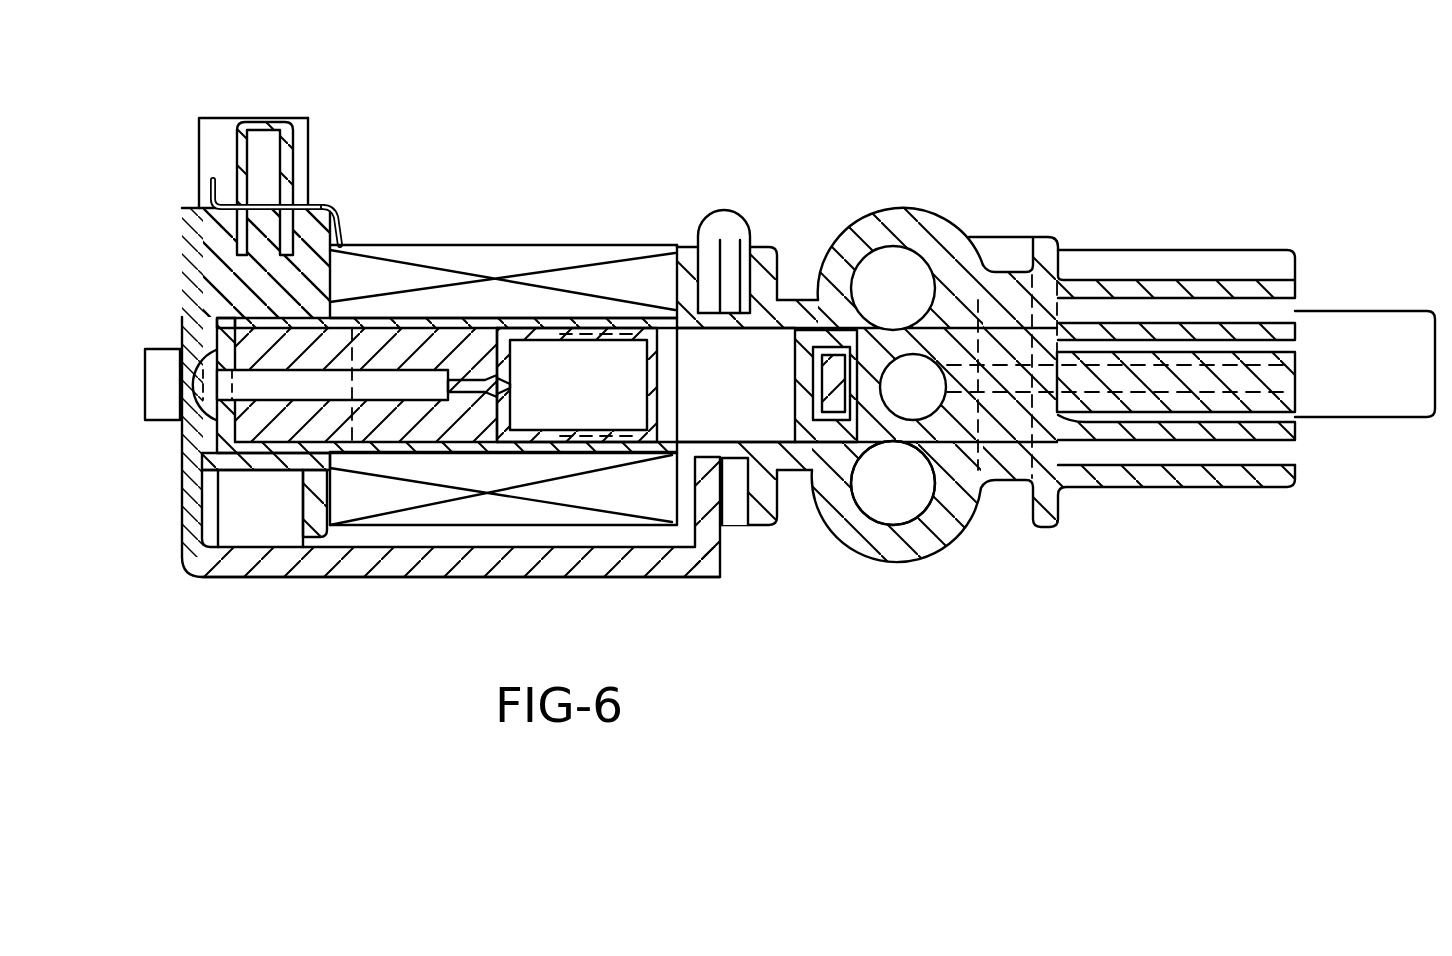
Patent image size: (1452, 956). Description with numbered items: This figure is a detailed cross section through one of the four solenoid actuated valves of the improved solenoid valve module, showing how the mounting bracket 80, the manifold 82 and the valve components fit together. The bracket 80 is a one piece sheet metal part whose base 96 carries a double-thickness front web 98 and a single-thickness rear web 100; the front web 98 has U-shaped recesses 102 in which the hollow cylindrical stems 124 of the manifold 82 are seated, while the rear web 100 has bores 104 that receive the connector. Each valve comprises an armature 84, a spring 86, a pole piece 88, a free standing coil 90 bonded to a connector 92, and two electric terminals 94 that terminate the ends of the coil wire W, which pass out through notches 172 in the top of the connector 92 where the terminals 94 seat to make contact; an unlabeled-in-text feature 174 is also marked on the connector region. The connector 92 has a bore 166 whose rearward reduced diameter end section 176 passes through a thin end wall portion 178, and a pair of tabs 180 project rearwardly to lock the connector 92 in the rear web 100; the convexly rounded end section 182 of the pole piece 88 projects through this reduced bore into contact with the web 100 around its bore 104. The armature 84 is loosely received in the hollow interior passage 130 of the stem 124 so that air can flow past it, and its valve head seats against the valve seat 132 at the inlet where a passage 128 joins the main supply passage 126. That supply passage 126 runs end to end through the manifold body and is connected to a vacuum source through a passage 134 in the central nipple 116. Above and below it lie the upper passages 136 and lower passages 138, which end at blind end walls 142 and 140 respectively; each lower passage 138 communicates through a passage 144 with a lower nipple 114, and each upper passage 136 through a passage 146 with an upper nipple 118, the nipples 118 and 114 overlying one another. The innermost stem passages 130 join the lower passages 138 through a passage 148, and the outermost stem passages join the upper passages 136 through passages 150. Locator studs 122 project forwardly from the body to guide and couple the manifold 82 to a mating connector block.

The mounting bracket 80 is at (718, 578).
The manifold 82 is at (920, 122).
The armature 84 is at (735, 432).
The spring 86 is at (545, 330).
The pole piece 88 is at (391, 332).
The free standing coil 90 is at (548, 268).
The connector 92 is at (335, 222).
The electric terminals 94 is at (256, 118).
The base 96 is at (380, 578).
The front web 98 is at (703, 228).
The rear web 100 is at (183, 220).
The U-shaped recesses 102 is at (740, 238).
The bores 104 is at (205, 472).
The lower nipples 114 is at (1246, 488).
The central nipple 116 is at (1288, 355).
The upper nipples 118 is at (1207, 275).
The locator studs 122 is at (1395, 310).
The hollow cylindrical stems 124 is at (432, 333).
The main supply passage 126 is at (913, 387).
The passages 128 is at (822, 385).
The hollow interior passage 130 is at (783, 330).
The valve seat 132 is at (818, 480).
The passage 134 is at (1330, 420).
The upper passages 136 is at (870, 243).
The lower passages 138 is at (895, 525).
The blind end walls 140 is at (912, 510).
The blind end walls 142 is at (911, 303).
The passage 144 is at (1005, 468).
The passage 146 is at (1123, 305).
The passage 148 is at (893, 483).
The passages 150 is at (800, 340).
The bore 166 is at (210, 318).
The notches 172 is at (300, 155).
The terminal housing 174 is at (228, 140).
The reduced diameter end section 176 is at (178, 355).
The end wall portion 178 is at (200, 328).
The tabs 180 is at (182, 348).
The convexly rounded end section 182 is at (178, 420).
The wire W is at (245, 188).